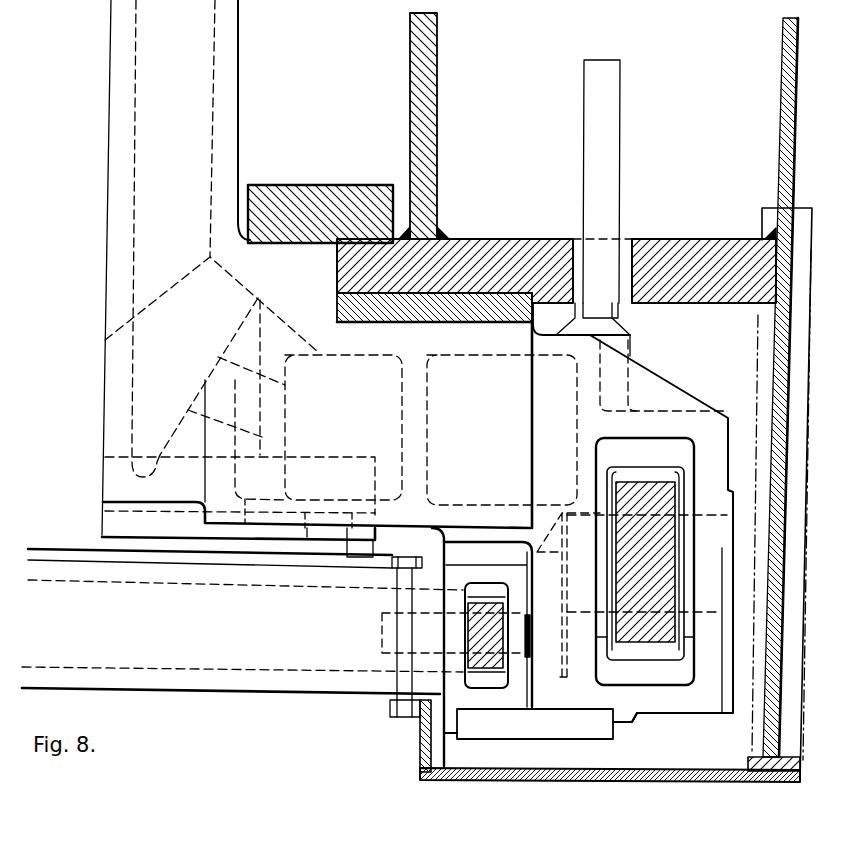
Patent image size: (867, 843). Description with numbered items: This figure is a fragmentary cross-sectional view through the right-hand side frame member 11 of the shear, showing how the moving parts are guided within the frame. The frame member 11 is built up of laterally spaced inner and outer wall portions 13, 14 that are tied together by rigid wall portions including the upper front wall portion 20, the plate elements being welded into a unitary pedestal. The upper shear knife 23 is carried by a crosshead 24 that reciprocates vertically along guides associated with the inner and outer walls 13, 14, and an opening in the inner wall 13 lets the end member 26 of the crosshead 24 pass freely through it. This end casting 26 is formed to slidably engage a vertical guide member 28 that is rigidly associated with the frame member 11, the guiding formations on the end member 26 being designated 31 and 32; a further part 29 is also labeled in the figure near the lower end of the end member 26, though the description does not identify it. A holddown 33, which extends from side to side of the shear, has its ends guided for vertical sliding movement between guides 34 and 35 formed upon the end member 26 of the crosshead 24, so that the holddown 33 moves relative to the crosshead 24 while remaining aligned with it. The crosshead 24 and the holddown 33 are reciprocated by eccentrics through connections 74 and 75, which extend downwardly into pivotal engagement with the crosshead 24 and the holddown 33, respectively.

The side frame member 11 is at (741, 785).
The inner wall portion 13 is at (430, 123).
The outer wall portion 14 is at (782, 114).
The upper front wall portion 20 is at (640, 770).
The upper shear knife 23 is at (275, 547).
The crosshead 24 is at (70, 320).
The end casting of the crosshead 26 is at (238, 137).
The vertical guide member 28 is at (480, 238).
The support 29 is at (614, 740).
The guiding formation 31 is at (338, 190).
The guiding formation 32 is at (462, 318).
The holddown 33 is at (262, 690).
The guide 34 is at (487, 548).
The guide 35 is at (547, 732).
The connection 74 is at (652, 655).
The connection 75 is at (483, 667).